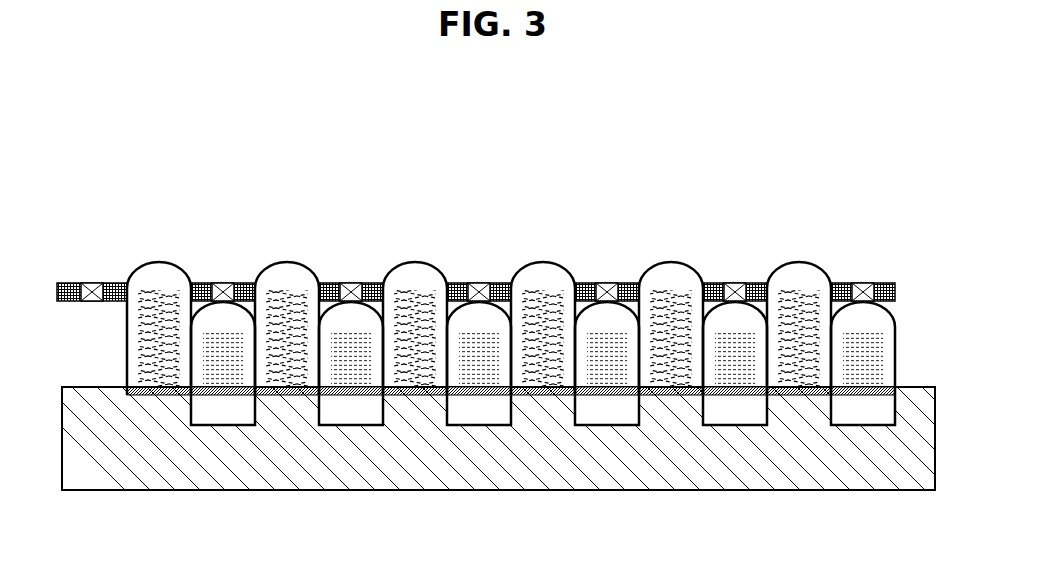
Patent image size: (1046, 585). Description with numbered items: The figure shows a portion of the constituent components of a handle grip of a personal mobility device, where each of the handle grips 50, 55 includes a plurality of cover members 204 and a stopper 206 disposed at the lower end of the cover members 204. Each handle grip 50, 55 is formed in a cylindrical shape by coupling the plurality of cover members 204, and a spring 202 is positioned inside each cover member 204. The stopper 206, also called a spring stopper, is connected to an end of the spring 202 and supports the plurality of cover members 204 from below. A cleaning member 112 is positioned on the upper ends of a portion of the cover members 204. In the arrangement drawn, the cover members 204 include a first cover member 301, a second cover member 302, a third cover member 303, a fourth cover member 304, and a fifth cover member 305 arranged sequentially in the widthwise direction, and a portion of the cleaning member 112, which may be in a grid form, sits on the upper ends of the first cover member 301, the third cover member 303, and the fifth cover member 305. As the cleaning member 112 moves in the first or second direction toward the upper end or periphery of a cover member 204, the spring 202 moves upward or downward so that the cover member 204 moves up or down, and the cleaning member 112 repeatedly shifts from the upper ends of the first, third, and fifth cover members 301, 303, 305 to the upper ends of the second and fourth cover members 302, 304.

The handle grip 50 is at (523, 324).
The handle grip 55 is at (452, 137).
The cleaning member 112 is at (68, 283).
The cover member 204 is at (157, 262).
The spring 202 is at (143, 338).
The stopper 206 is at (133, 392).
The first cover member 301 is at (887, 314).
The second cover member 302 is at (812, 268).
The third cover member 303 is at (741, 302).
The fourth cover member 304 is at (673, 267).
The fifth cover member 305 is at (608, 302).